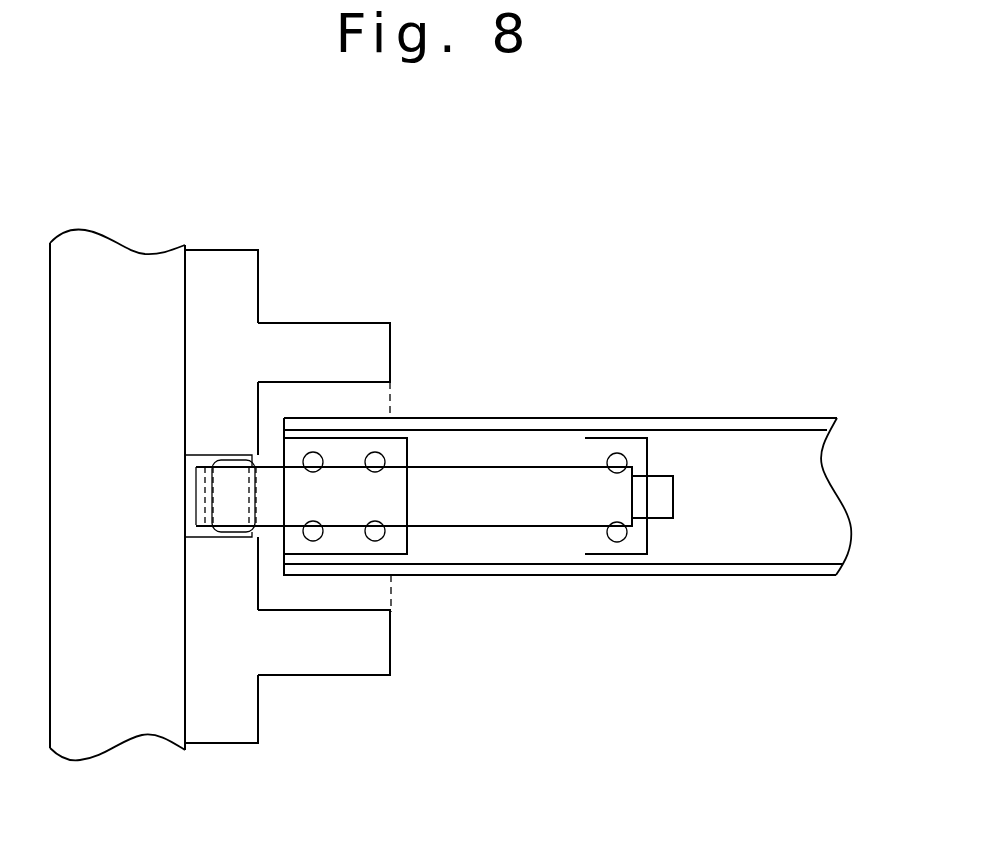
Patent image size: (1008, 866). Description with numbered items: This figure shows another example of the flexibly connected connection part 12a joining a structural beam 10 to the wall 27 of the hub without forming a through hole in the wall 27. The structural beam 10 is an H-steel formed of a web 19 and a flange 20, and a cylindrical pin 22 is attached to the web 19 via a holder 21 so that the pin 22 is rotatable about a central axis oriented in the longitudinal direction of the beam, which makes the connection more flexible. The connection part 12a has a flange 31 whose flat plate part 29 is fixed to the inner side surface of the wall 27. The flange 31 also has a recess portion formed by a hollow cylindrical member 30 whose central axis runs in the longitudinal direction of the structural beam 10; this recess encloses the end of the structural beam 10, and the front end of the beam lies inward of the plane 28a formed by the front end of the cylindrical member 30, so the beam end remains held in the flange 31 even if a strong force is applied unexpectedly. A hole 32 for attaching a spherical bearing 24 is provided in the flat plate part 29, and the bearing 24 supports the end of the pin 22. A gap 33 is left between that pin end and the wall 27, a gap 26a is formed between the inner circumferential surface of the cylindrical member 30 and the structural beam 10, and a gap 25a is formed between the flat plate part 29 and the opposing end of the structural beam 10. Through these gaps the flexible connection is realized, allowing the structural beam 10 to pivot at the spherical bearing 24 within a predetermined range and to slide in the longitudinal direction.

The structural beam 10 is at (567, 437).
The connection part 12a is at (502, 260).
The web 19 is at (722, 347).
The flange 20 is at (765, 425).
The holder 21 is at (400, 440).
The pin 22 is at (500, 475).
The spherical bearing 24 is at (205, 467).
The gap 25a is at (295, 650).
The gap 26a is at (350, 603).
The wall 27 is at (92, 757).
The plane 28a is at (391, 590).
The flat plate part 29 is at (237, 253).
The hollow cylindrical member 30 is at (324, 297).
The flange 31 is at (287, 441).
The hole 32 is at (193, 538).
The gap 33 is at (190, 497).